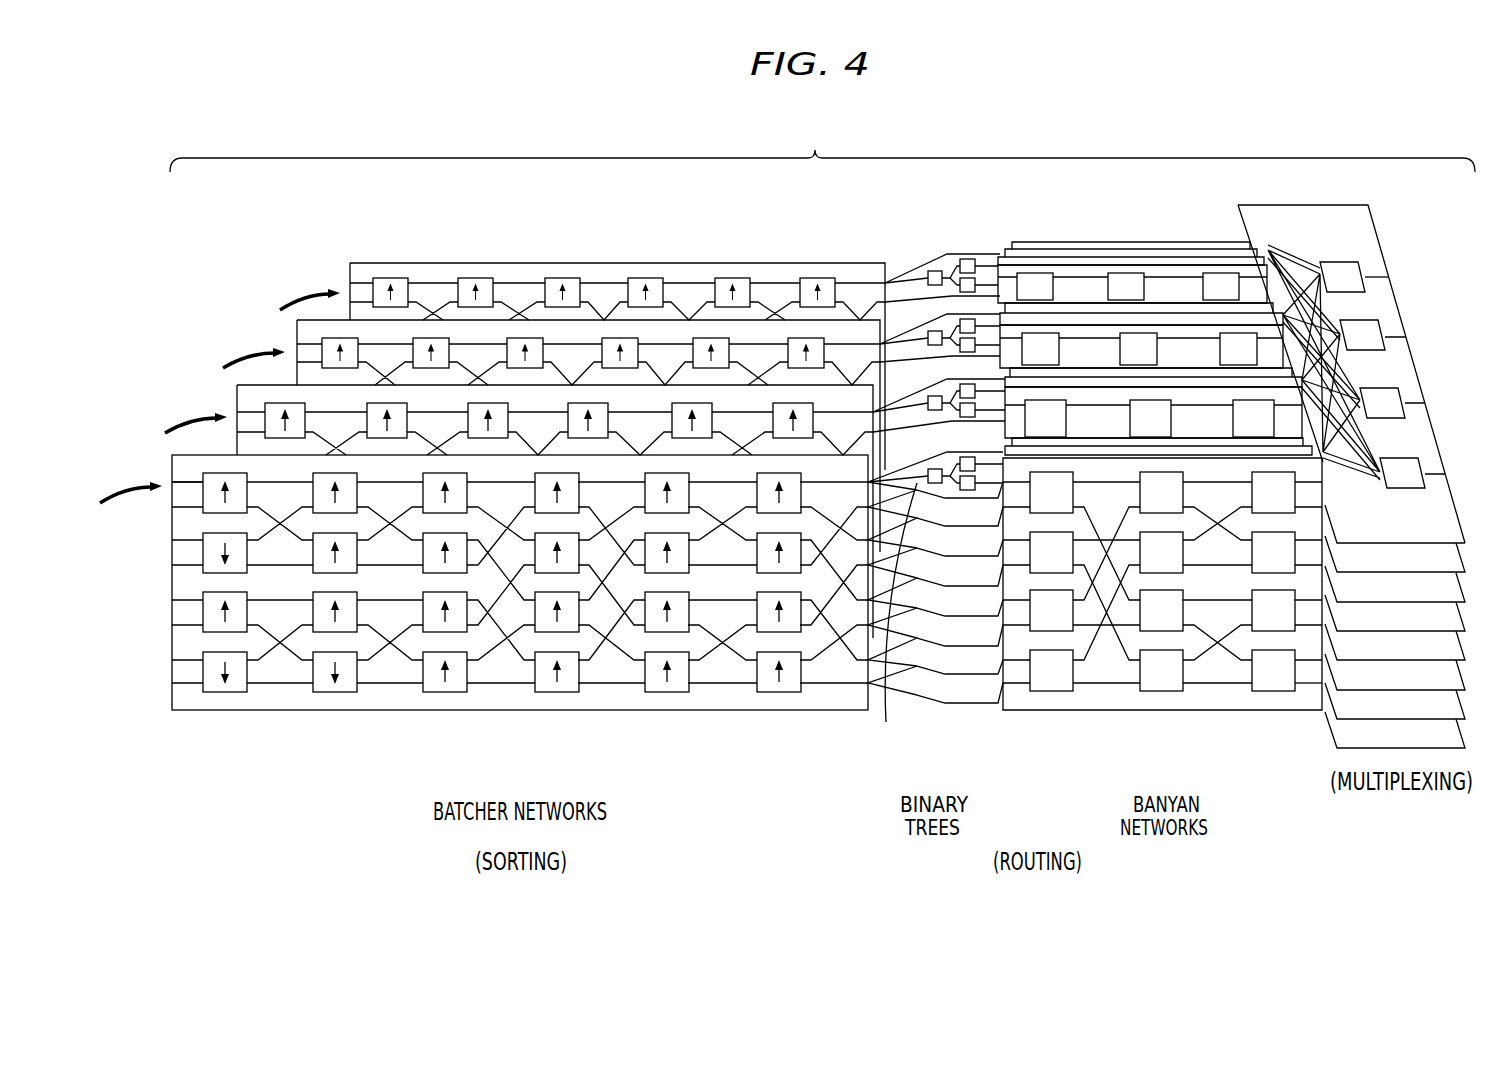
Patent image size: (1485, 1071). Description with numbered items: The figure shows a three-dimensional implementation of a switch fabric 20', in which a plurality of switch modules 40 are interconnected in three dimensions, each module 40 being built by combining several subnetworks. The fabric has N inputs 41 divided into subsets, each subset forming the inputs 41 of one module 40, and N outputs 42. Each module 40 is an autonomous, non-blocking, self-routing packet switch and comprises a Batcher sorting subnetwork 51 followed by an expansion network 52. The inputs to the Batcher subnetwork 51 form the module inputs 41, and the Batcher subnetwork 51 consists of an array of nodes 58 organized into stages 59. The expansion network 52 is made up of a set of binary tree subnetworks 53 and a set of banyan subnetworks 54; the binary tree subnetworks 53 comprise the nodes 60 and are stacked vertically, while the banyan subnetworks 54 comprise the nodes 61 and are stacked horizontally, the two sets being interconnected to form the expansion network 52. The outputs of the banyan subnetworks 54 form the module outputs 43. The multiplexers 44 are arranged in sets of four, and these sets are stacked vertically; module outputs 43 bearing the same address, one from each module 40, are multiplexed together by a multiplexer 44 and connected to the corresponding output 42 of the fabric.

The switch fabric 20' is at (822, 148).
The switch module 40 is at (211, 411).
The inputs 41 is at (172, 483).
The outputs 42 is at (1374, 272).
The module outputs 43 is at (1306, 727).
The multiplexer 44 is at (1343, 272).
The Batcher sorting subnetwork 51 is at (520, 616).
The expansion network 52 is at (1162, 615).
The binary tree subnetworks 53 is at (936, 491).
The banyan subnetworks 54 is at (1232, 692).
The nodes 58 is at (333, 693).
The stages 59 is at (593, 713).
The nodes 60 is at (934, 270).
The nodes 61 is at (1032, 288).